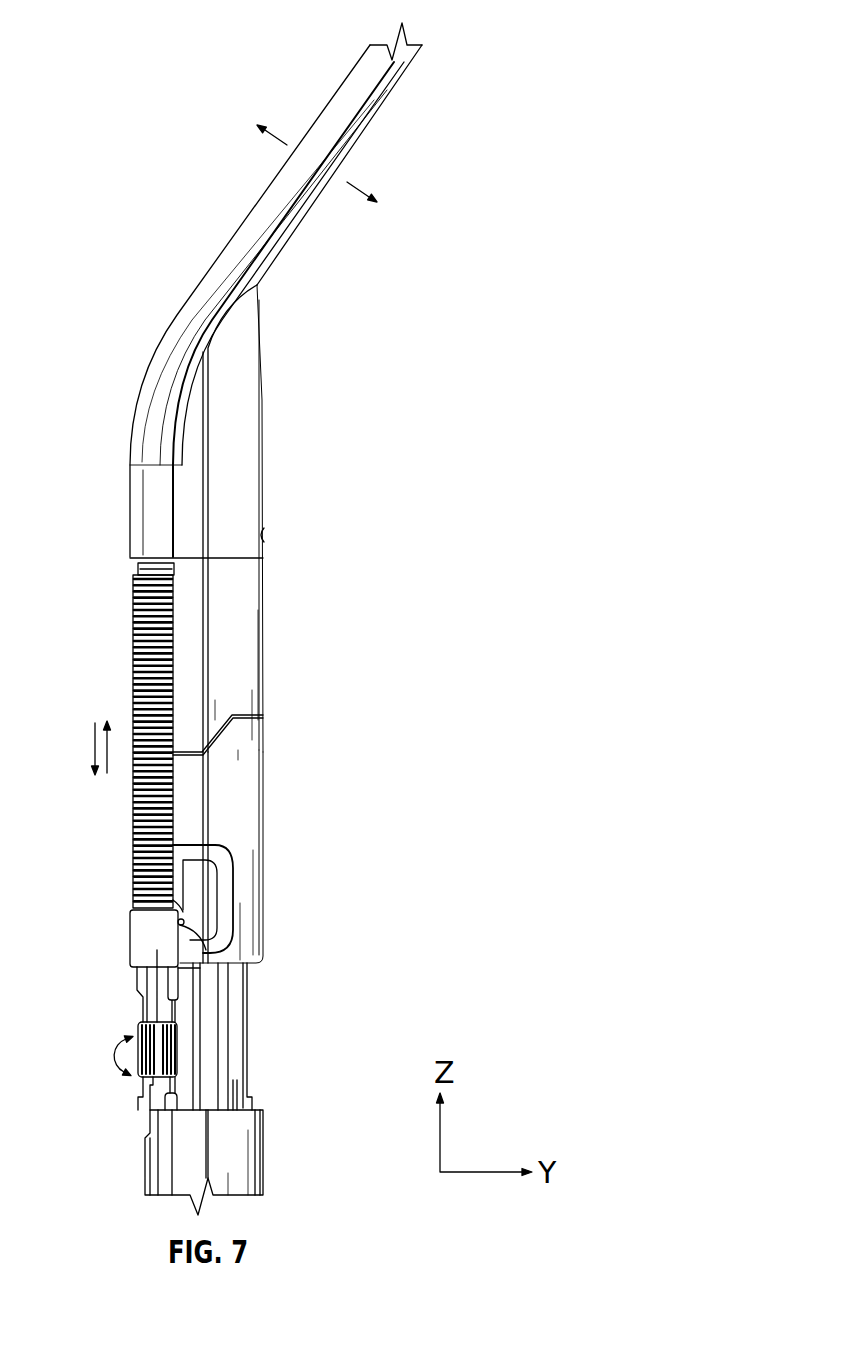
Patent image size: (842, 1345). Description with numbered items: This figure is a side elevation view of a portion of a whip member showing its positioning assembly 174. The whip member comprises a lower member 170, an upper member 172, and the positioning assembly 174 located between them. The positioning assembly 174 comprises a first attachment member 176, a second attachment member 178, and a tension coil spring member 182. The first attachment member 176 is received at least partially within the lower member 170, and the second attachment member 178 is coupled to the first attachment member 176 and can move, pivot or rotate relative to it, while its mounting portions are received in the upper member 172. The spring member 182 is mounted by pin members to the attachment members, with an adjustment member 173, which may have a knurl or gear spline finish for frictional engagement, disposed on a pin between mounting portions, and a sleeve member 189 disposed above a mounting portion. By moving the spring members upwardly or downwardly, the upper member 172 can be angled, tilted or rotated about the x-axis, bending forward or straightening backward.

The lower member 170 is at (237, 1153).
The upper member 172 is at (273, 185).
The adjustment member 173 is at (138, 1030).
The positioning assembly 174 is at (115, 585).
The first attachment member 176 is at (250, 807).
The second attachment member 178 is at (247, 635).
The second spring member 182 is at (133, 632).
The sleeve member 189 is at (140, 927).